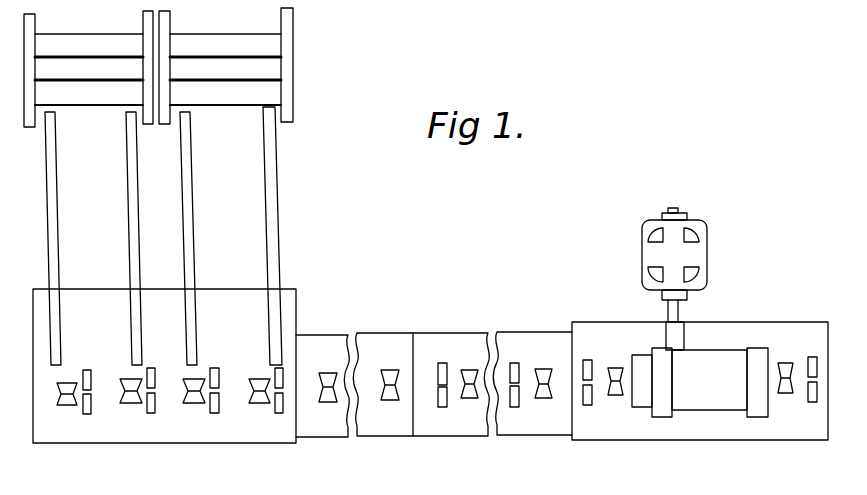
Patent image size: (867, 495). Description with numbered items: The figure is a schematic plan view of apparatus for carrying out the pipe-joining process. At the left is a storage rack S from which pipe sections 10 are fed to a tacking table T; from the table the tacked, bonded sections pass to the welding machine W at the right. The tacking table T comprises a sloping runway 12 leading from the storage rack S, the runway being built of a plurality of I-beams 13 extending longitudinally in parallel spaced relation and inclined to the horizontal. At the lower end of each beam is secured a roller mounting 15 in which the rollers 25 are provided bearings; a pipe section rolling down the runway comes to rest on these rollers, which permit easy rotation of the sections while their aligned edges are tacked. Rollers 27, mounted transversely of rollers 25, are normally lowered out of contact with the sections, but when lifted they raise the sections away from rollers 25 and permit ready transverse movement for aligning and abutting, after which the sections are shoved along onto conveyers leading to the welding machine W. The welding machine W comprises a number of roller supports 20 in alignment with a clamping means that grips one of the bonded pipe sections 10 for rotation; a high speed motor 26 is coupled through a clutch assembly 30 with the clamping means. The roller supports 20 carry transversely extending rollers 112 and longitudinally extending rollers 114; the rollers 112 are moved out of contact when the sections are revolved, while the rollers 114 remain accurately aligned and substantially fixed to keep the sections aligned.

The pipe sections 10 is at (228, 85).
The storage rack S is at (297, 72).
The I-beams 13 is at (185, 201).
The sloping runway 12 is at (283, 211).
The tacking table T is at (300, 292).
The rollers 25 is at (130, 378).
The rollers 27 is at (195, 403).
The roller mounting 15 is at (269, 415).
The clutch assembly 30 is at (397, 333).
The roller supports 20 is at (519, 340).
The longitudinally extending rollers 114 is at (445, 378).
The transversely extending rollers 112 is at (471, 400).
The welding machine W is at (728, 318).
The high speed motor 26 is at (674, 265).